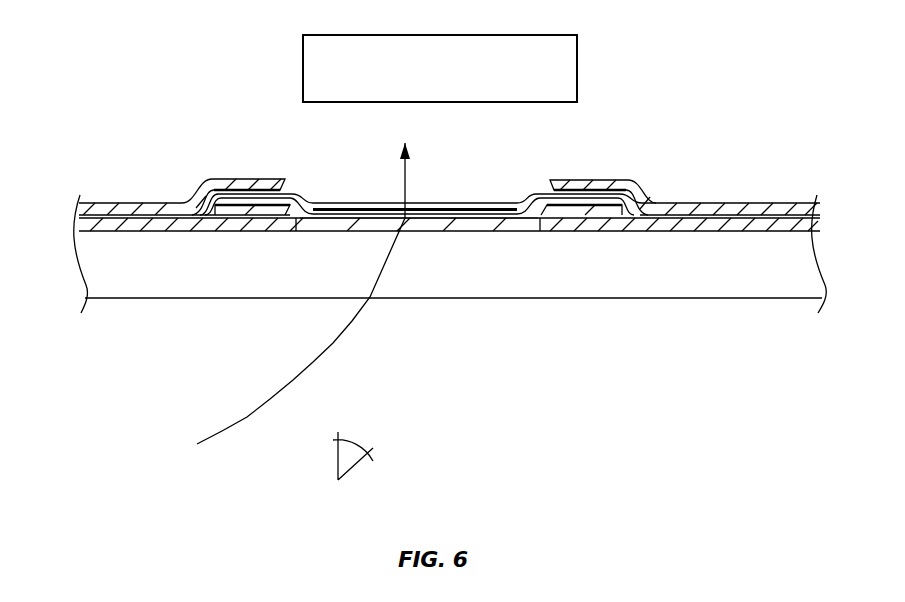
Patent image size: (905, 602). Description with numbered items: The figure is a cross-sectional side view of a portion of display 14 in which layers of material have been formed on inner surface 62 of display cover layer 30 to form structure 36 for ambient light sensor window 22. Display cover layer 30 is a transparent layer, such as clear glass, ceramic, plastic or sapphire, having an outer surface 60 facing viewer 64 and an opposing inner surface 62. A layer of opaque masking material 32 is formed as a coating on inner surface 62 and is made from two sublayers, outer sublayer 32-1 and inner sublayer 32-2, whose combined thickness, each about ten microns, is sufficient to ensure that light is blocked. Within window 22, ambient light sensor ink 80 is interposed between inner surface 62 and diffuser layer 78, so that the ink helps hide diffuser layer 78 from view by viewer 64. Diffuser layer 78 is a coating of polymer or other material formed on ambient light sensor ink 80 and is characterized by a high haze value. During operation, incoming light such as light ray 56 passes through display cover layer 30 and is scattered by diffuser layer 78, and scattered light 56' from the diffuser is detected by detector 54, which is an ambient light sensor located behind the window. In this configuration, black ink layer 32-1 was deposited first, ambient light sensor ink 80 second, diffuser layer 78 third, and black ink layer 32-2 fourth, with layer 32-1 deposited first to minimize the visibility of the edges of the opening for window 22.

The display 14 is at (121, 446).
The ambient light sensor window 22 is at (542, 245).
The display cover layer 30 is at (762, 296).
The opaque masking layer 32 is at (828, 203).
The outer sublayer 32-1 is at (76, 222).
The inner sublayer 32-2 is at (76, 207).
The structure 36 is at (318, 172).
The detector 54 is at (571, 68).
The light ray 56 is at (301, 297).
The scattered light 56' is at (428, 150).
The outer surface 60 is at (124, 300).
The inner surface 62 is at (110, 233).
The viewer 64 is at (353, 465).
The diffuser layer 78 is at (498, 211).
The ambient light sensor ink 80 is at (498, 226).